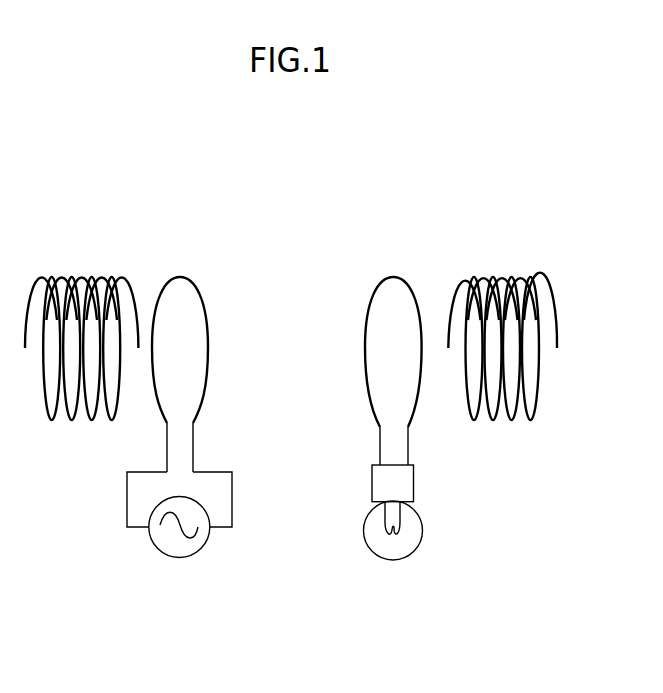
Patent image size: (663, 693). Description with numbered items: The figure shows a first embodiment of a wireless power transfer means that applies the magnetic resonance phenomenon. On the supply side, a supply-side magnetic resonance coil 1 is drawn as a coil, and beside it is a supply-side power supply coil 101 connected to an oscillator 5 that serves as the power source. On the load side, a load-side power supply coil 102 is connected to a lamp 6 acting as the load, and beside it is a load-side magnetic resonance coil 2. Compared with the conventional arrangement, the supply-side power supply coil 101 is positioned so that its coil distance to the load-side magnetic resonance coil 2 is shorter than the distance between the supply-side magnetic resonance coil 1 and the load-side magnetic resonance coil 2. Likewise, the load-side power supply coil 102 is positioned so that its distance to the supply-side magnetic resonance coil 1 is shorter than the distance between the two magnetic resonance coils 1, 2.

The supply-side magnetic resonance coil 1 is at (81, 276).
The load-side magnetic resonance coil 2 is at (500, 276).
The supply-side power supply coil 101 is at (178, 275).
The load-side power supply coil 102 is at (392, 275).
The oscillator 5 is at (172, 557).
The lamp 6 is at (392, 558).